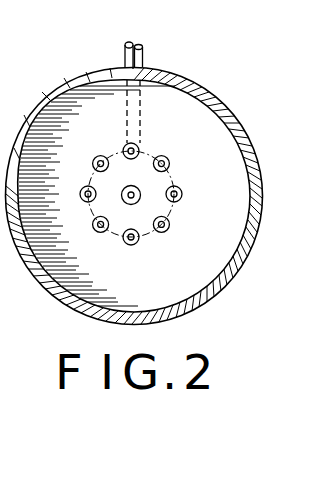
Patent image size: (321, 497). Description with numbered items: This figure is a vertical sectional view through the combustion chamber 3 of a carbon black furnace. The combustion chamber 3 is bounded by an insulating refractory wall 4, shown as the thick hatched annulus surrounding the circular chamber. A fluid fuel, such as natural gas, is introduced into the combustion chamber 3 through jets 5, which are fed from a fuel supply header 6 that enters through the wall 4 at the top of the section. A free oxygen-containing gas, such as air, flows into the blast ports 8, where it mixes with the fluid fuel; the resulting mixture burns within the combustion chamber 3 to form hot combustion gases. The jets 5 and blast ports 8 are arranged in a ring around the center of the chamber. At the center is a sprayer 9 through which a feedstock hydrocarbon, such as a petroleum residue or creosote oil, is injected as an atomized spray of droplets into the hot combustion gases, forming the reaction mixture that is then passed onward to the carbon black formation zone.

The combustion chamber 3 is at (99, 196).
The insulating refractory wall 4 is at (256, 152).
The jets 5 is at (176, 185).
The fuel supply header 6 is at (140, 60).
The blast ports 8 is at (172, 221).
The sprayer 9 is at (122, 196).